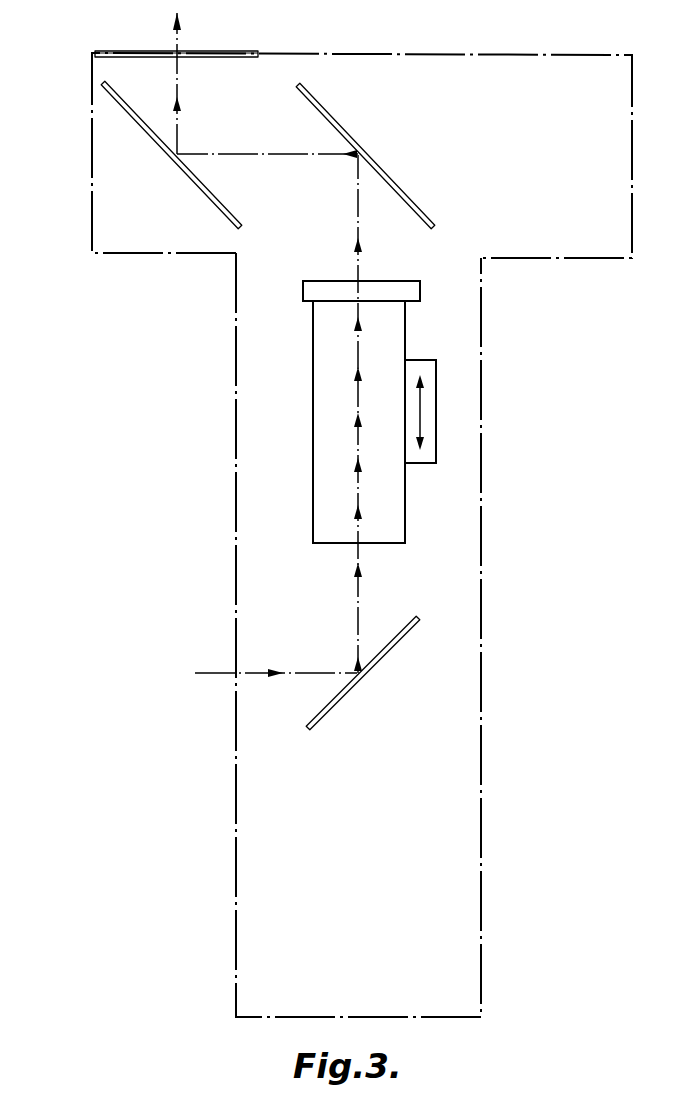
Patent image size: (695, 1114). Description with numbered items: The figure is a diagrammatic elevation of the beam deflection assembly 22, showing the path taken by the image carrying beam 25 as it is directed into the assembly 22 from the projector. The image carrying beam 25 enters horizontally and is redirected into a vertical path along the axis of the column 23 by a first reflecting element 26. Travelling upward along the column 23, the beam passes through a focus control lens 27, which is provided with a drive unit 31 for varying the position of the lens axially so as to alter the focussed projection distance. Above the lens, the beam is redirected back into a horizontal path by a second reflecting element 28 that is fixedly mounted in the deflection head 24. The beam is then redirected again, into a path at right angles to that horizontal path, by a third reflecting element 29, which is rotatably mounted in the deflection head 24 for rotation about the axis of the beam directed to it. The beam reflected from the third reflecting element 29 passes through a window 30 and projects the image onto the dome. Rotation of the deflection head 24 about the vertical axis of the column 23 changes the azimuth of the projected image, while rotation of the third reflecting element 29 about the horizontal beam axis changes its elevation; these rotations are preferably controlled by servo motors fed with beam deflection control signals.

The beam deflection assembly 22 is at (335, 535).
The column 23 is at (482, 611).
The deflection head 24 is at (87, 202).
The image carrying beam 25 is at (213, 672).
The first reflecting element 26 is at (400, 638).
The focus control lens 27 is at (402, 318).
The second reflecting element 28 is at (385, 169).
The third reflecting element 29 is at (145, 127).
The window 30 is at (228, 52).
The drive unit 31 is at (413, 360).